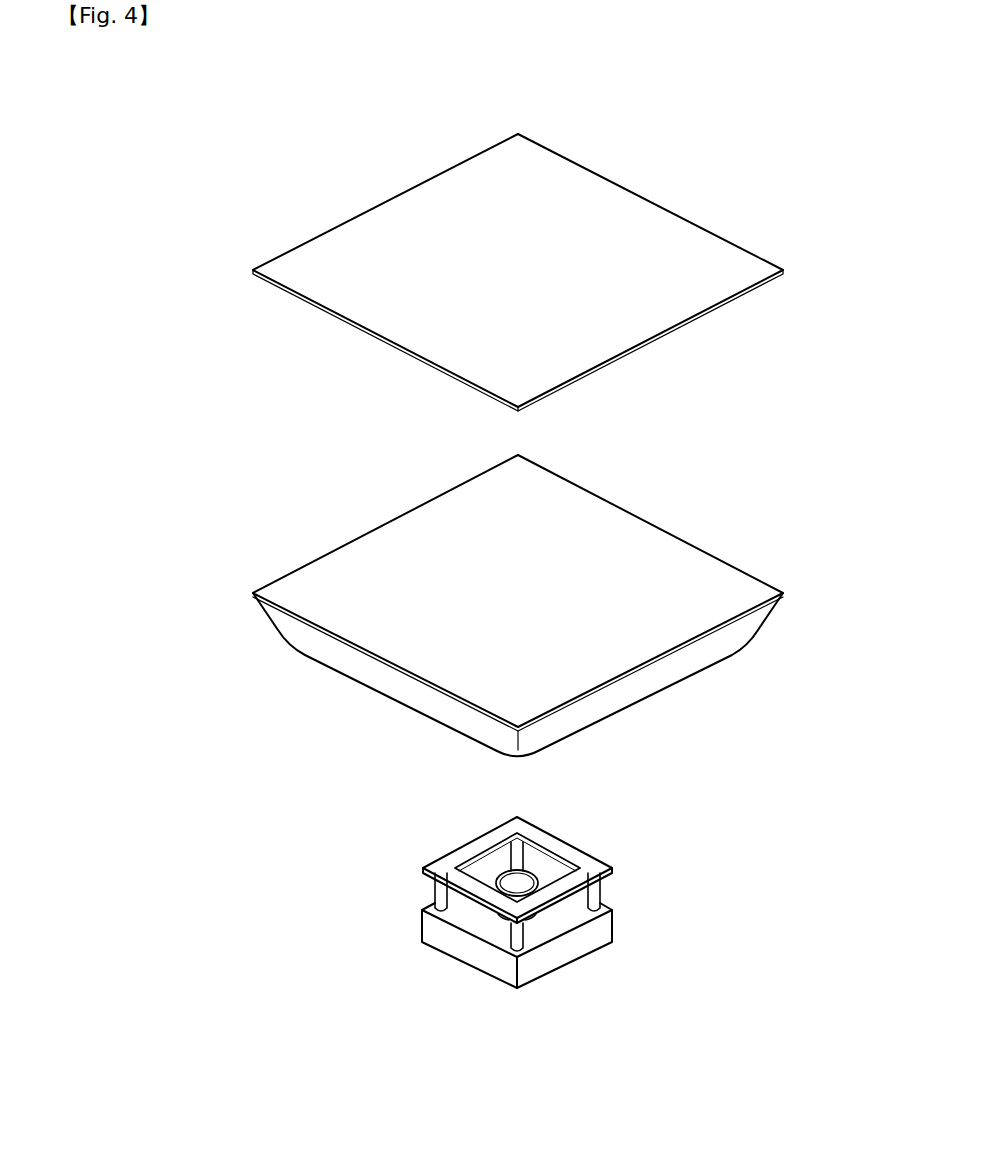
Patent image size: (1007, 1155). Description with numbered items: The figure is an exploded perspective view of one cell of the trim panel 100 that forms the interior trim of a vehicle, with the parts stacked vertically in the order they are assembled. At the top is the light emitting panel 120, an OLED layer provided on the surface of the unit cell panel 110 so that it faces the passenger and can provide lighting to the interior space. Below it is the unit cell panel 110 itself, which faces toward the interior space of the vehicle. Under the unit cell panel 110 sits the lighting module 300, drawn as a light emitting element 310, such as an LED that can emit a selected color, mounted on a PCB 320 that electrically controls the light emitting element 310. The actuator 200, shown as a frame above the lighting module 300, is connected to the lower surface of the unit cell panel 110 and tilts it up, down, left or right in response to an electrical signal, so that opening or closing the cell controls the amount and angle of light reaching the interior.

The trim panel 100 is at (372, 128).
The unit cell panel 110 is at (652, 542).
The light emitting panel 120 is at (638, 213).
The actuator 200 is at (592, 860).
The lighting module 300 is at (398, 1067).
The light emitting element 310 is at (515, 883).
The PCB 320 is at (490, 963).